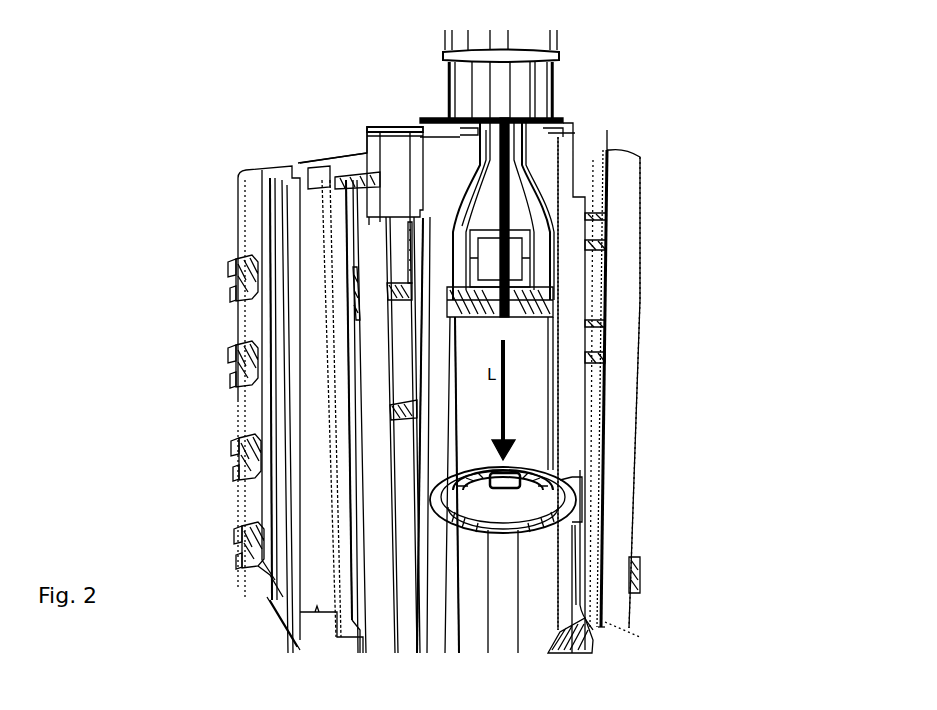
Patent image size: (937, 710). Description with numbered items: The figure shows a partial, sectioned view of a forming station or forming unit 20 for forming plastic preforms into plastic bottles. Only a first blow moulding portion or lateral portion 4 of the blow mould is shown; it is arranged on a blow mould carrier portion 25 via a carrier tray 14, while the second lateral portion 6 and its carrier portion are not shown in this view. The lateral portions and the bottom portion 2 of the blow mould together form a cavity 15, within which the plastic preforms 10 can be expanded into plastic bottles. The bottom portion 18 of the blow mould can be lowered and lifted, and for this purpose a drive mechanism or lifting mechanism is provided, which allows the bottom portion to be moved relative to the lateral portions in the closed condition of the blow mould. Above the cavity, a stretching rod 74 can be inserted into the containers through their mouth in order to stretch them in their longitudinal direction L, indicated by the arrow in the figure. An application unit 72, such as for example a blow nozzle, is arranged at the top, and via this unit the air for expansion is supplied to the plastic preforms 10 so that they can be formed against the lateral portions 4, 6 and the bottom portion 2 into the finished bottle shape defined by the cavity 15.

The bottom portion 2 is at (594, 659).
The first lateral portion 4 is at (437, 338).
The second lateral portion 6 is at (570, 362).
The plastic preform 10 is at (523, 260).
The carrier tray 14 is at (363, 258).
The cavity 15 is at (522, 400).
The bottom portion of the blow mould 18 is at (440, 507).
The forming unit 20 is at (683, 205).
The blow mould carrier portion 25 is at (307, 402).
The application unit 72 is at (533, 67).
The stretching rod 74 is at (510, 172).